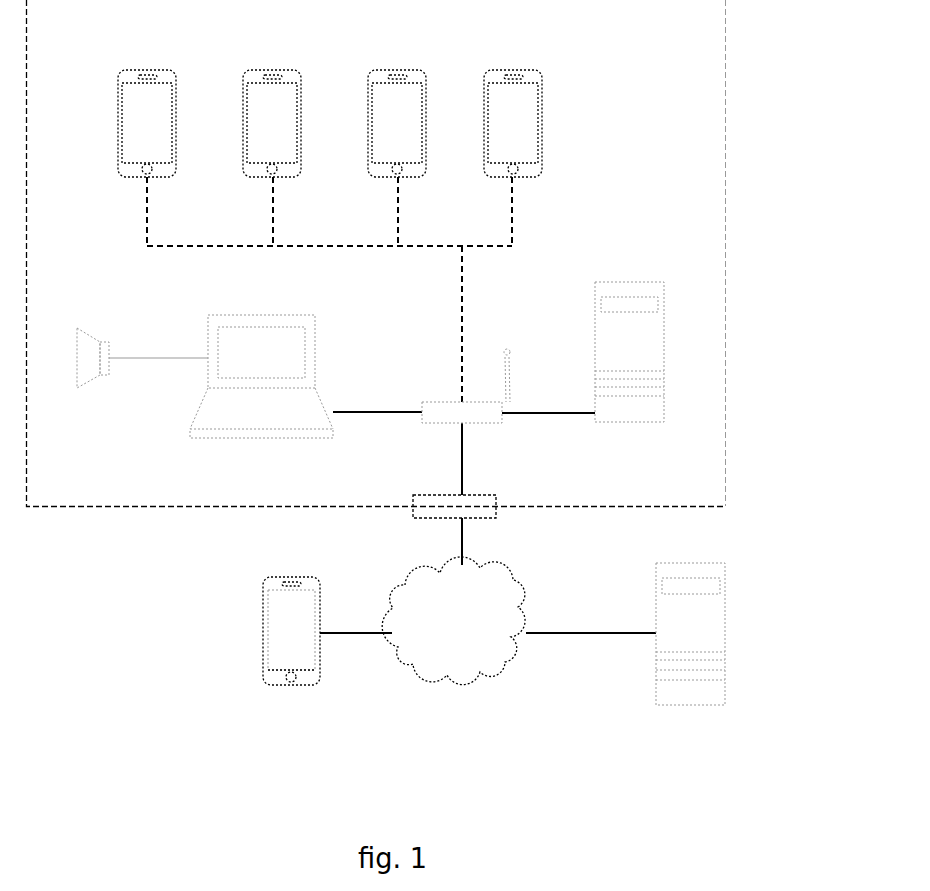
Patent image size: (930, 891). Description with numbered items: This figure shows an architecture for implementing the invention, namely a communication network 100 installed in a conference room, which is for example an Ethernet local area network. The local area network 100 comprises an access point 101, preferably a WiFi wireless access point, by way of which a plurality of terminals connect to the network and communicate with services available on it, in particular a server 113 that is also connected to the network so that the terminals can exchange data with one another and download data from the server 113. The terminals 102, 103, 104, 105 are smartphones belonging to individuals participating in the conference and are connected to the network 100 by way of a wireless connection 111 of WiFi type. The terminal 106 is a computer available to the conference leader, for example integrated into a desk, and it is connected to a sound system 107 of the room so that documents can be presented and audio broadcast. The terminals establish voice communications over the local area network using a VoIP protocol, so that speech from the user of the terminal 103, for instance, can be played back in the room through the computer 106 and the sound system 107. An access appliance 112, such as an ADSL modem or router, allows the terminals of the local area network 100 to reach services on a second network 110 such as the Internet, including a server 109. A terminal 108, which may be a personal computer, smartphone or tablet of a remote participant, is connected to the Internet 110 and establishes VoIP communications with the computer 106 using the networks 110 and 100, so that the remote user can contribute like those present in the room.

The communication network 100 is at (726, 55).
The access point 101 is at (443, 424).
The terminal 102 is at (133, 70).
The terminal 103 is at (258, 70).
The terminal 104 is at (393, 70).
The terminal 105 is at (512, 70).
The computer 106 is at (262, 316).
The sound system 107 is at (90, 335).
The terminal 108 is at (280, 576).
The server 109 is at (673, 565).
The second network 110 is at (457, 683).
The wireless connection 111 is at (462, 305).
The access appliance 112 is at (496, 496).
The server 113 is at (612, 282).